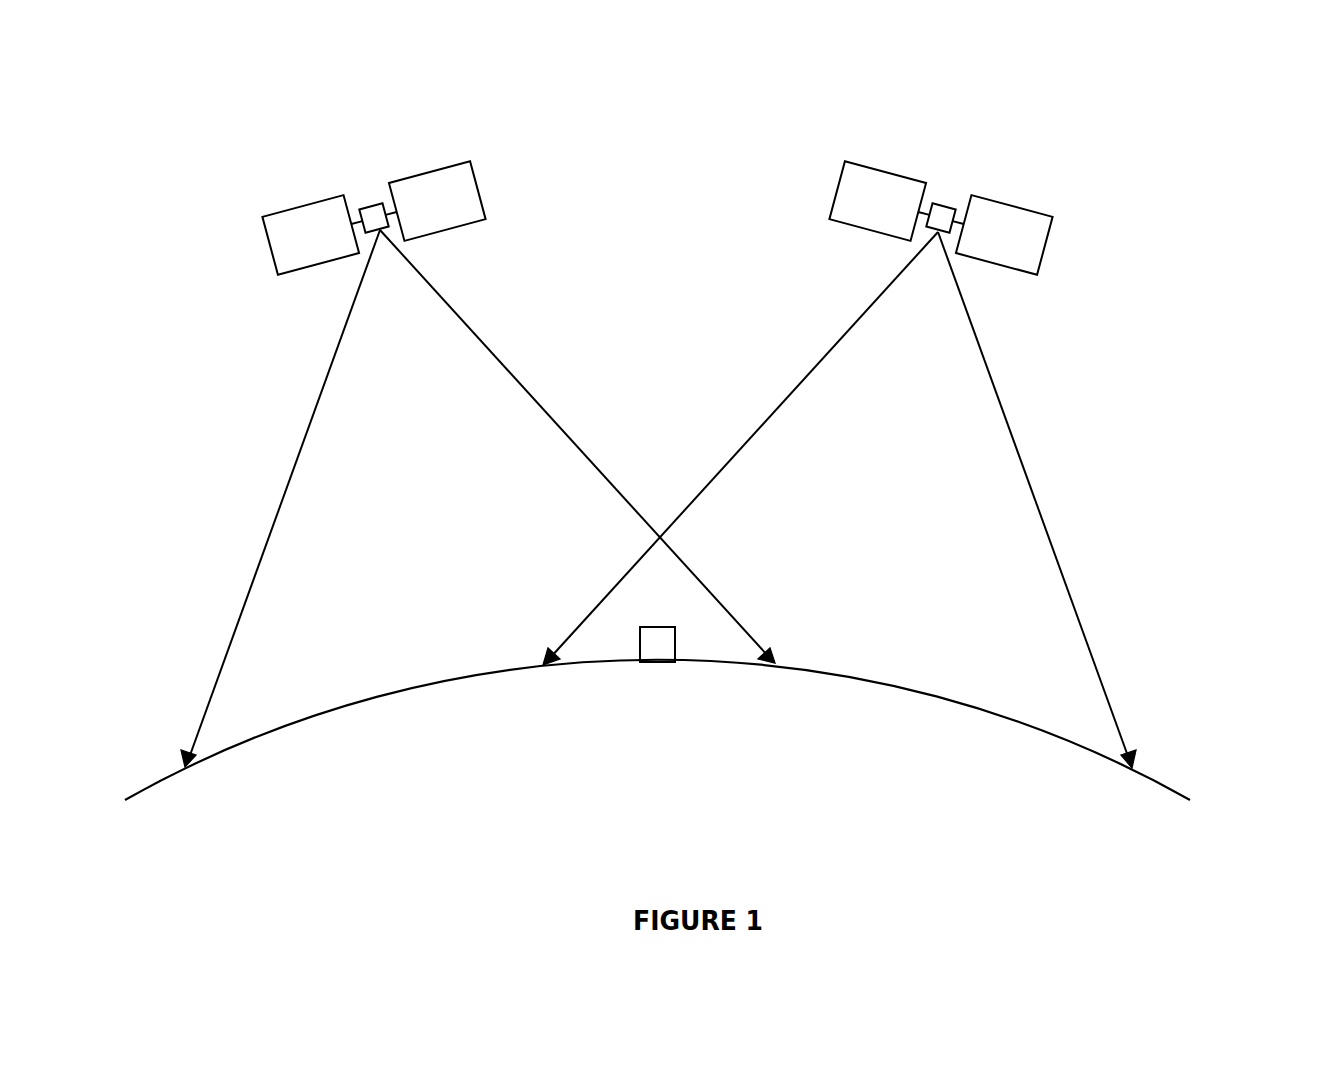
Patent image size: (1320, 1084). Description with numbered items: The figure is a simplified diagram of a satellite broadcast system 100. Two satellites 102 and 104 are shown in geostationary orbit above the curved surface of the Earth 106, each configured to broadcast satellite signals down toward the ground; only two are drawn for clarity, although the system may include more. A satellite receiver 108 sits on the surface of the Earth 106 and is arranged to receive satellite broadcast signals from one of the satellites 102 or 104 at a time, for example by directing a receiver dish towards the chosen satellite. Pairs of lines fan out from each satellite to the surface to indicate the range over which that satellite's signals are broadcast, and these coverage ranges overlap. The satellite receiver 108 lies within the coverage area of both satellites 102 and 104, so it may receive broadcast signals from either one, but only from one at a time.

The satellite broadcast system 100 is at (198, 152).
The satellite 102 is at (943, 205).
The satellite 104 is at (368, 205).
The Earth 106 is at (1168, 785).
The satellite receiver 108 is at (657, 663).